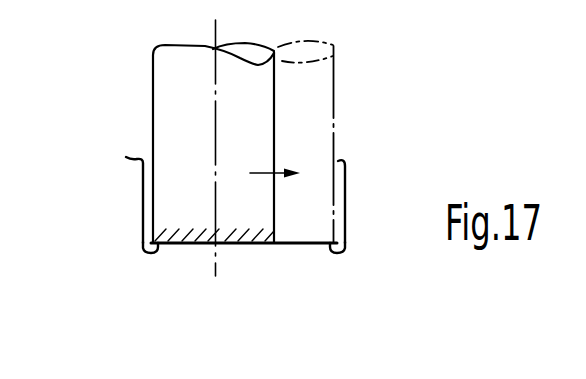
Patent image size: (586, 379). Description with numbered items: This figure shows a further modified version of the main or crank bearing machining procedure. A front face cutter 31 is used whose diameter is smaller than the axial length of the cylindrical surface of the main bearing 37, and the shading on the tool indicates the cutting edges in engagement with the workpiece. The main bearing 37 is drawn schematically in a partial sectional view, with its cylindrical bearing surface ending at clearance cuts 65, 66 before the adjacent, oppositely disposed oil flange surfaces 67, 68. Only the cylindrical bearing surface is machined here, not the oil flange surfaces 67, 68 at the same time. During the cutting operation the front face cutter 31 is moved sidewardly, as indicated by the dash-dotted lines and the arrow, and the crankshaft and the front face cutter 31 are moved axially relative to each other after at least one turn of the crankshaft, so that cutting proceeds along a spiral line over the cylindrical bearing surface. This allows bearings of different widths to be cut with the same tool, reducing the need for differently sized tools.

The front face cutter 31 is at (253, 138).
The main bearing 37 is at (293, 246).
The clearance cut 65 is at (146, 255).
The clearance cut 66 is at (346, 254).
The oil flange surface 67 is at (143, 190).
The oil flange surface 68 is at (345, 197).